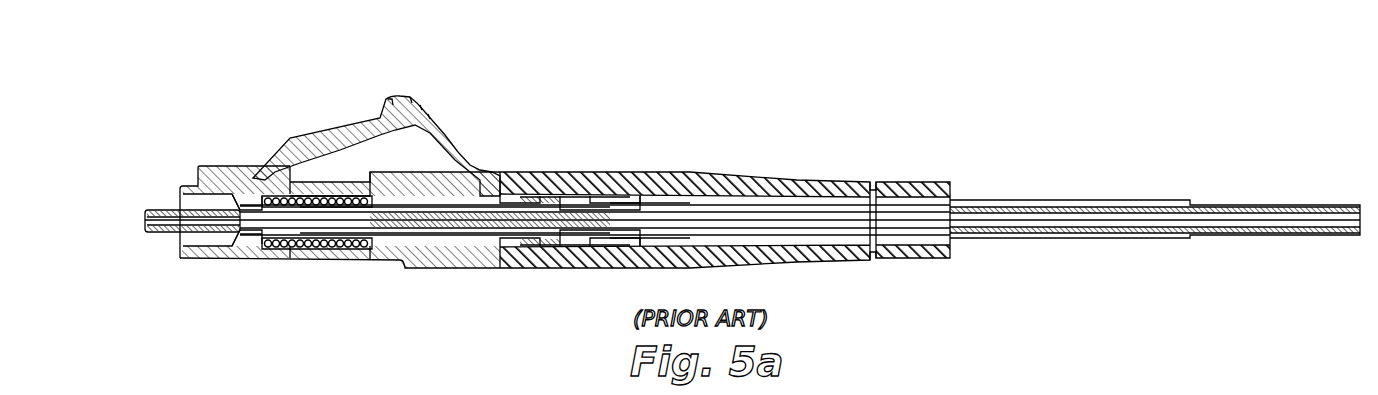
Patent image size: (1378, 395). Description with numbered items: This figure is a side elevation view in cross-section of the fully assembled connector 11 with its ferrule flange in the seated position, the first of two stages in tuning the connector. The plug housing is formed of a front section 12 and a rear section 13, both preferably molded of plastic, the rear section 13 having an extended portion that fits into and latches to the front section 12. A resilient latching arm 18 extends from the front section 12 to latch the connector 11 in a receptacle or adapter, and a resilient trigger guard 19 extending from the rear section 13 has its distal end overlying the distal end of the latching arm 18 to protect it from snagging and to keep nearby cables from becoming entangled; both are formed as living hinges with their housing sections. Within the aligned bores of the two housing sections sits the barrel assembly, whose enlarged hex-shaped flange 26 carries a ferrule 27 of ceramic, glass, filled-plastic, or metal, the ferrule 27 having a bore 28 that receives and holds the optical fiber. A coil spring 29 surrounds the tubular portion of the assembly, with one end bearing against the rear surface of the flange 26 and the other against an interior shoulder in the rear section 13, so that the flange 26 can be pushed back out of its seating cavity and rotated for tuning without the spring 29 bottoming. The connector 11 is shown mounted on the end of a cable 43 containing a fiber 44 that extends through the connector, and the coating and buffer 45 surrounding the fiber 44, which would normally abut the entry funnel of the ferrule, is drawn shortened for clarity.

The connector 11 is at (634, 112).
The front section 12 is at (190, 186).
The rear section 13 is at (416, 270).
The resilient latching arm 18 is at (350, 122).
The trigger guard 19 is at (430, 112).
The flange 26 is at (252, 198).
The ferrule 27 is at (167, 234).
The bore 28 is at (146, 221).
The coil spring 29 is at (277, 250).
The cable 43 is at (1333, 206).
The fiber 44 is at (381, 230).
The buffer 45 is at (518, 230).